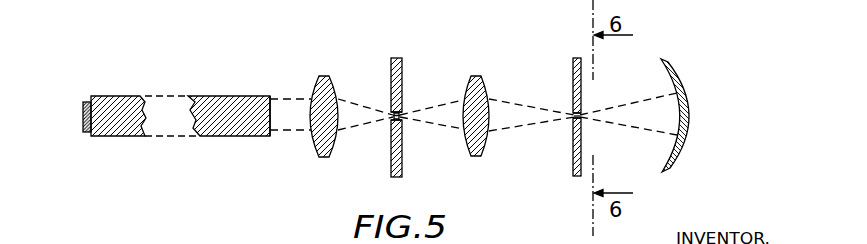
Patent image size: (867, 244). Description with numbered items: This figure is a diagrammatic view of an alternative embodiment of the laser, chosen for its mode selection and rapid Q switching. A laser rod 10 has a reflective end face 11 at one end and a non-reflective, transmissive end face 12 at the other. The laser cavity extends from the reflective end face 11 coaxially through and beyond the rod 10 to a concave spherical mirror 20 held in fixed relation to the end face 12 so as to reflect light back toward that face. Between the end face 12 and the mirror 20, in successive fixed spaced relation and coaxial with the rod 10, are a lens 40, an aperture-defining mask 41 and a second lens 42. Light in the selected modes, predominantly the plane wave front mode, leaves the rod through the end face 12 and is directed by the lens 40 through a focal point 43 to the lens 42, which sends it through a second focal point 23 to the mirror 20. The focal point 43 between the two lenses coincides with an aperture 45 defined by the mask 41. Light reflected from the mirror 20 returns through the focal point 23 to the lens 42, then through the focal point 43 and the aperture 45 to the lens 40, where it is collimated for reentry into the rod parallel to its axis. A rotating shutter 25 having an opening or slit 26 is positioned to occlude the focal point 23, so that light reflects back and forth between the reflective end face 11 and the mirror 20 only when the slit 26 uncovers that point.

The laser rod 10 is at (200, 96).
The reflective end face 11 is at (82, 117).
The non-reflective, transmissive end face 12 is at (271, 114).
The concave spherical mirror 20 is at (678, 74).
The focal point 23 is at (580, 113).
The rotating shutter 25 is at (573, 75).
The opening or slit 26 is at (574, 118).
The lens 40 is at (318, 148).
The aperture-defining structure or mask 41 is at (391, 163).
The second lens 42 is at (474, 150).
The focal point 43 is at (398, 115).
The aperture 45 is at (391, 110).